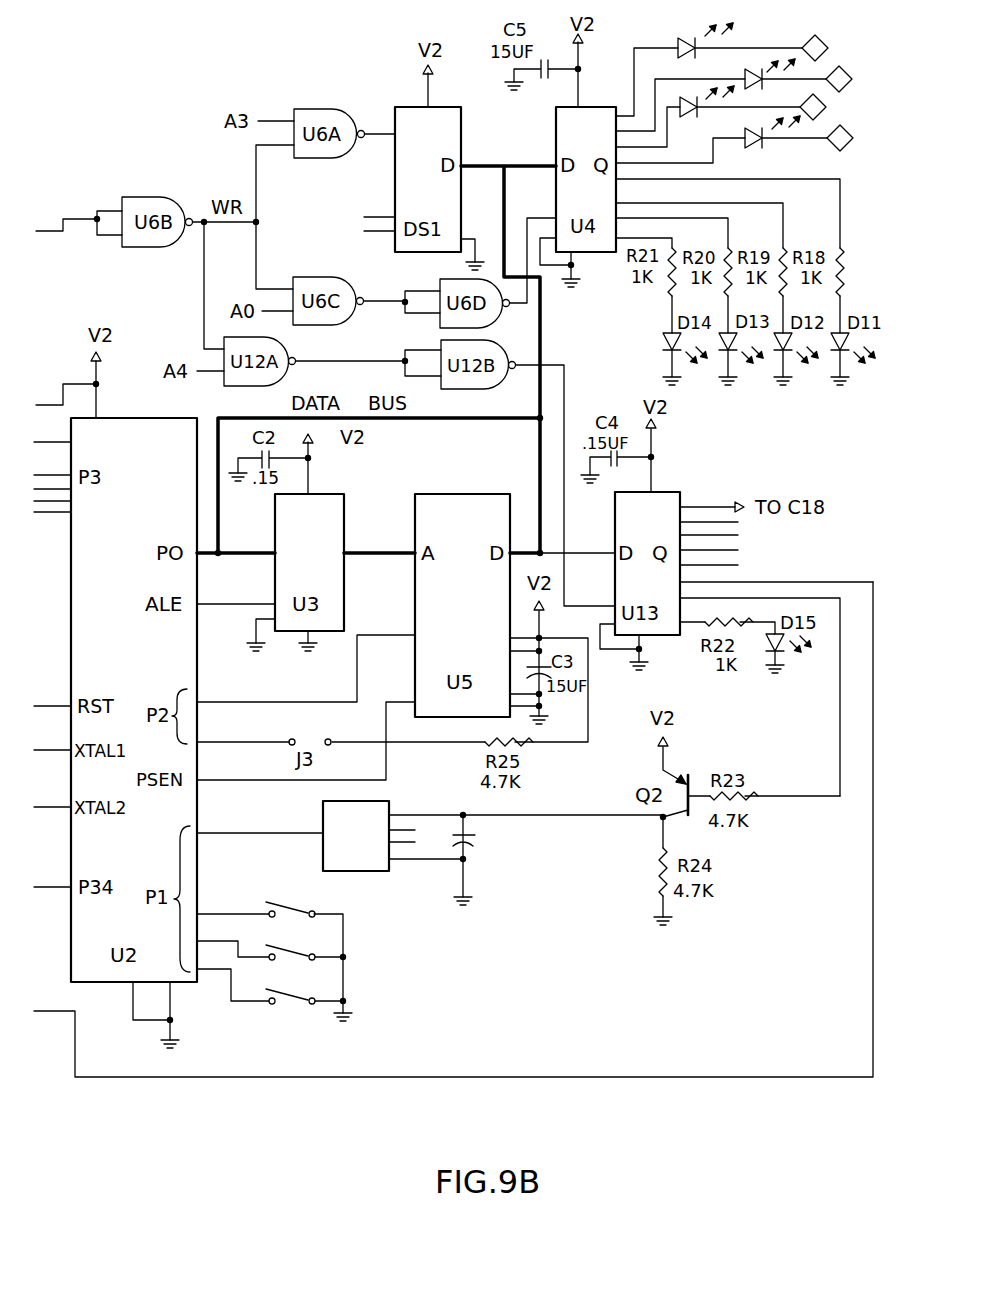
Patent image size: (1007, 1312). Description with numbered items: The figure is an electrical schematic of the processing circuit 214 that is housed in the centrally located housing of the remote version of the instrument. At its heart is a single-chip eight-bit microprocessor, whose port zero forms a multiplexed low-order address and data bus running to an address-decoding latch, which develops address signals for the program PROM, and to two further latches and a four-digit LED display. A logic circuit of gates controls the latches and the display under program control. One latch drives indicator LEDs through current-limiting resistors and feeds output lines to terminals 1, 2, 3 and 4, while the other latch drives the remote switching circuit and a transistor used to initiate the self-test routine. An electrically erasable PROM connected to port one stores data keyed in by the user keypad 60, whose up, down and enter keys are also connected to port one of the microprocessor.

The user keypad 60 is at (385, 963).
The processing circuit 214 is at (550, 898).
The output connector 1 (D8) 1 is at (740, 92).
The output connector 2 (D9) 2 is at (732, 116).
The output connector 3 (D10) 3 is at (744, 141).
The output connector 4 (D7) 4 is at (733, 69).